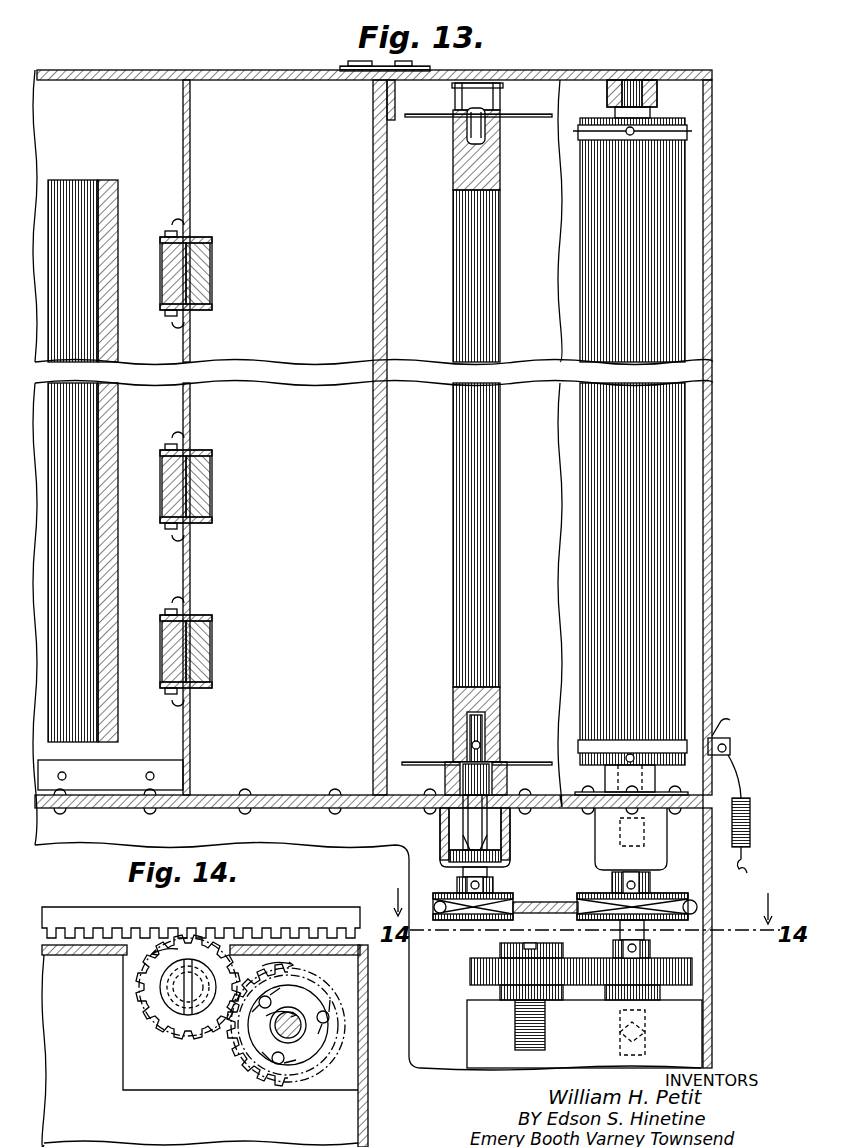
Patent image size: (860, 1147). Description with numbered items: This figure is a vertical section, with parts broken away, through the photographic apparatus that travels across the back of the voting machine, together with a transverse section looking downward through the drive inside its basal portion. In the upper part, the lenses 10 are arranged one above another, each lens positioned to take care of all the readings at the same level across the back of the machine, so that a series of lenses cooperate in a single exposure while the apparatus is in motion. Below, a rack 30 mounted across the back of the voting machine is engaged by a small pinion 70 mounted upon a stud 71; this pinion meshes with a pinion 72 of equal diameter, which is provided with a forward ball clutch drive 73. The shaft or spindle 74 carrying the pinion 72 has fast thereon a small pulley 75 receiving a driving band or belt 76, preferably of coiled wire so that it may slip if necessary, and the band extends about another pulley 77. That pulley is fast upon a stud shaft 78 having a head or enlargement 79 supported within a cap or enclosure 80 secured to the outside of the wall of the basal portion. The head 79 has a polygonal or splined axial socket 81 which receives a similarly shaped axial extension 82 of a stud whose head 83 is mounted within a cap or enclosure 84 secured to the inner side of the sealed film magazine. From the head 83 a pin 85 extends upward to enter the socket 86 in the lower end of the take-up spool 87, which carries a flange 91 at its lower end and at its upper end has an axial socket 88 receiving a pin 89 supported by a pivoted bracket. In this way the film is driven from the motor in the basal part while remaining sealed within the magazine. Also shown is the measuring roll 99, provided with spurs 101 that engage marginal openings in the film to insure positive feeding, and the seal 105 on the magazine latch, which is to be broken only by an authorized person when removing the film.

In FIG. 13, the lens 10 is at (213, 278).
In FIG. 14, the rack 30 is at (80, 912).
In FIG. 13, the pinion 70 is at (482, 974).
In FIG. 14, the pinion 70 is at (193, 932).
In FIG. 14, the stud 71 is at (165, 998).
In FIG. 13, the pinion 72 is at (680, 969).
In FIG. 14, the pinion 72 is at (250, 1066).
In FIG. 14, the forward ball clutch drive 73 is at (306, 1052).
In FIG. 13, the shaft or spindle 74 is at (628, 925).
In FIG. 13, the small pulley 75 is at (655, 894).
In FIG. 13, the driving band or belt 76 is at (700, 907).
In FIG. 13, the pulley 77 is at (470, 922).
In FIG. 13, the stud shaft 78 is at (492, 879).
In FIG. 13, the head or enlargement 79 is at (452, 839).
In FIG. 13, the cap or enclosure 80 is at (440, 834).
In FIG. 13, the axial socket 81 is at (462, 861).
In FIG. 13, the axial extension 82 is at (481, 813).
In FIG. 13, the head of stud 83 is at (500, 767).
In FIG. 13, the cap or enclosure 84 is at (520, 796).
In FIG. 13, the pin 85 is at (487, 743).
In FIG. 13, the socket 86 is at (470, 721).
In FIG. 13, the take-up spool 87 is at (460, 476).
In FIG. 13, the axial socket 88 is at (465, 140).
In FIG. 13, the pin 89 is at (458, 103).
In FIG. 13, the flange 91 is at (418, 762).
In FIG. 13, the measuring roll 99 is at (600, 276).
In FIG. 13, the spurs 101 is at (582, 132).
In FIG. 13, the seal 105 is at (748, 826).